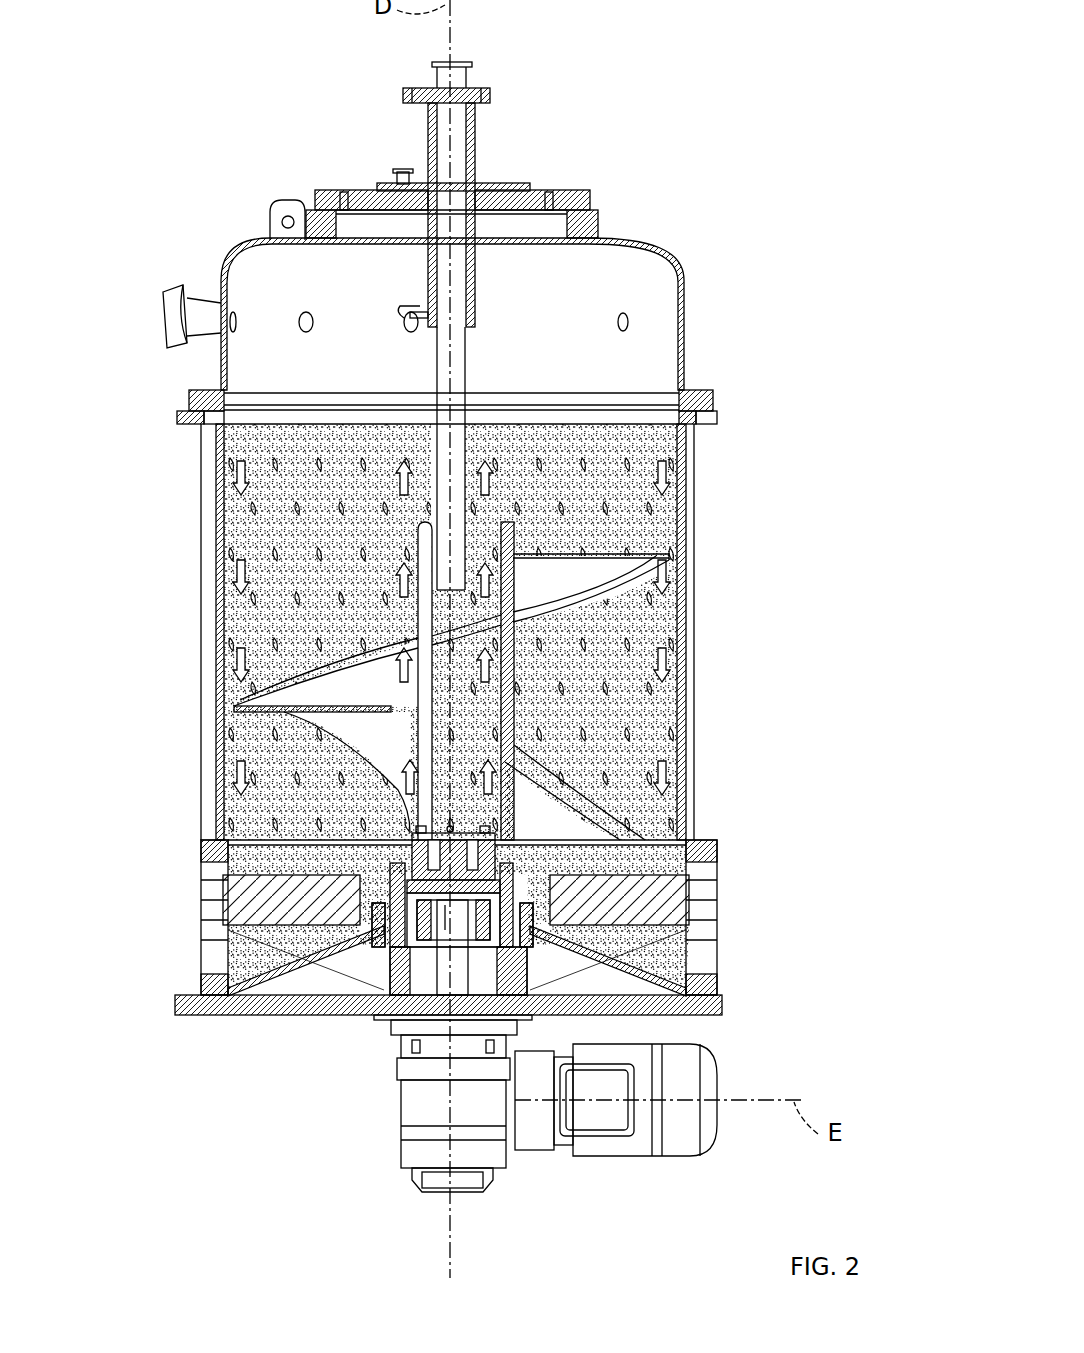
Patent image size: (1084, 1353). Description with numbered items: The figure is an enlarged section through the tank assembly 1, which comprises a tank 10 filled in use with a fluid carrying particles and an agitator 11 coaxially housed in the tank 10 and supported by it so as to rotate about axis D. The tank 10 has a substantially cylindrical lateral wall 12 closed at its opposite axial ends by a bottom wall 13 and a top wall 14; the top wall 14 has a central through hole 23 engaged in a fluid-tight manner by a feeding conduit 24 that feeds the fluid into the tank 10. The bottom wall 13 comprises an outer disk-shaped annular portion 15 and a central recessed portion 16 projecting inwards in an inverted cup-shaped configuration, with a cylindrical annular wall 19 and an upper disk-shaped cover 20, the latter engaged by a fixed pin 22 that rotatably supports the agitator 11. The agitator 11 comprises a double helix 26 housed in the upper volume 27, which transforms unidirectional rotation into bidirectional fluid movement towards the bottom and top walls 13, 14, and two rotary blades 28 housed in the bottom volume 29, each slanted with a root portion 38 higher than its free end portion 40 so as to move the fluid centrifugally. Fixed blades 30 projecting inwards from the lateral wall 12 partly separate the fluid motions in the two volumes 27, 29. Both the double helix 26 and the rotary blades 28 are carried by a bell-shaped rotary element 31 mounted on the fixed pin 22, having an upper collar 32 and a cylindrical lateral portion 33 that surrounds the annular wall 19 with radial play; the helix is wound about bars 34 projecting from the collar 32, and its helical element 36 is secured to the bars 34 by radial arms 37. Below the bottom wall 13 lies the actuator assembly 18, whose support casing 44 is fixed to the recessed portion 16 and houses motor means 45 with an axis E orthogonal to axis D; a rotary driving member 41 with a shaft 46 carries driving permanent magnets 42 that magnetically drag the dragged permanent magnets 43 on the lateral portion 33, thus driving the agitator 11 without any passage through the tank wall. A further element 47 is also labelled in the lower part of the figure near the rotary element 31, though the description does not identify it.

The tank assembly 1 is at (704, 106).
The tank 10 is at (690, 325).
The agitator 11 is at (607, 618).
The lateral wall 12 is at (690, 570).
The bottom wall 13 is at (259, 1015).
The top wall 14 is at (266, 289).
The annular portion 15 is at (596, 1000).
The recessed portion 16 is at (421, 923).
The actuator assembly 18 is at (603, 1185).
The annular wall 19 is at (508, 980).
The cover 20 is at (420, 830).
The fixed pin 22 is at (488, 832).
The through hole 23 is at (420, 218).
The feeding conduit 24 is at (477, 141).
The double helix 26 is at (645, 590).
The upper volume 27 is at (273, 450).
The rotary blade 28 is at (278, 972).
The bottom volume 29 is at (684, 998).
The fixed blade 30 is at (236, 893).
The rotary element 31 is at (480, 832).
The upper collar 32 is at (446, 826).
The lateral portion 33 is at (390, 965).
The bars 34 is at (414, 530).
The helical element 36 is at (592, 838).
The arms 37 is at (650, 557).
The root portion 38 is at (338, 986).
The free end portion 40 is at (262, 1010).
The rotary driving member 41 is at (452, 985).
The driving permanent magnets 42 is at (388, 905).
The dragged permanent magnets 43 is at (214, 920).
The support casing 44 is at (486, 1152).
The motor means 45 is at (642, 1128).
The shaft 46 is at (442, 985).
The seal 47 is at (478, 958).